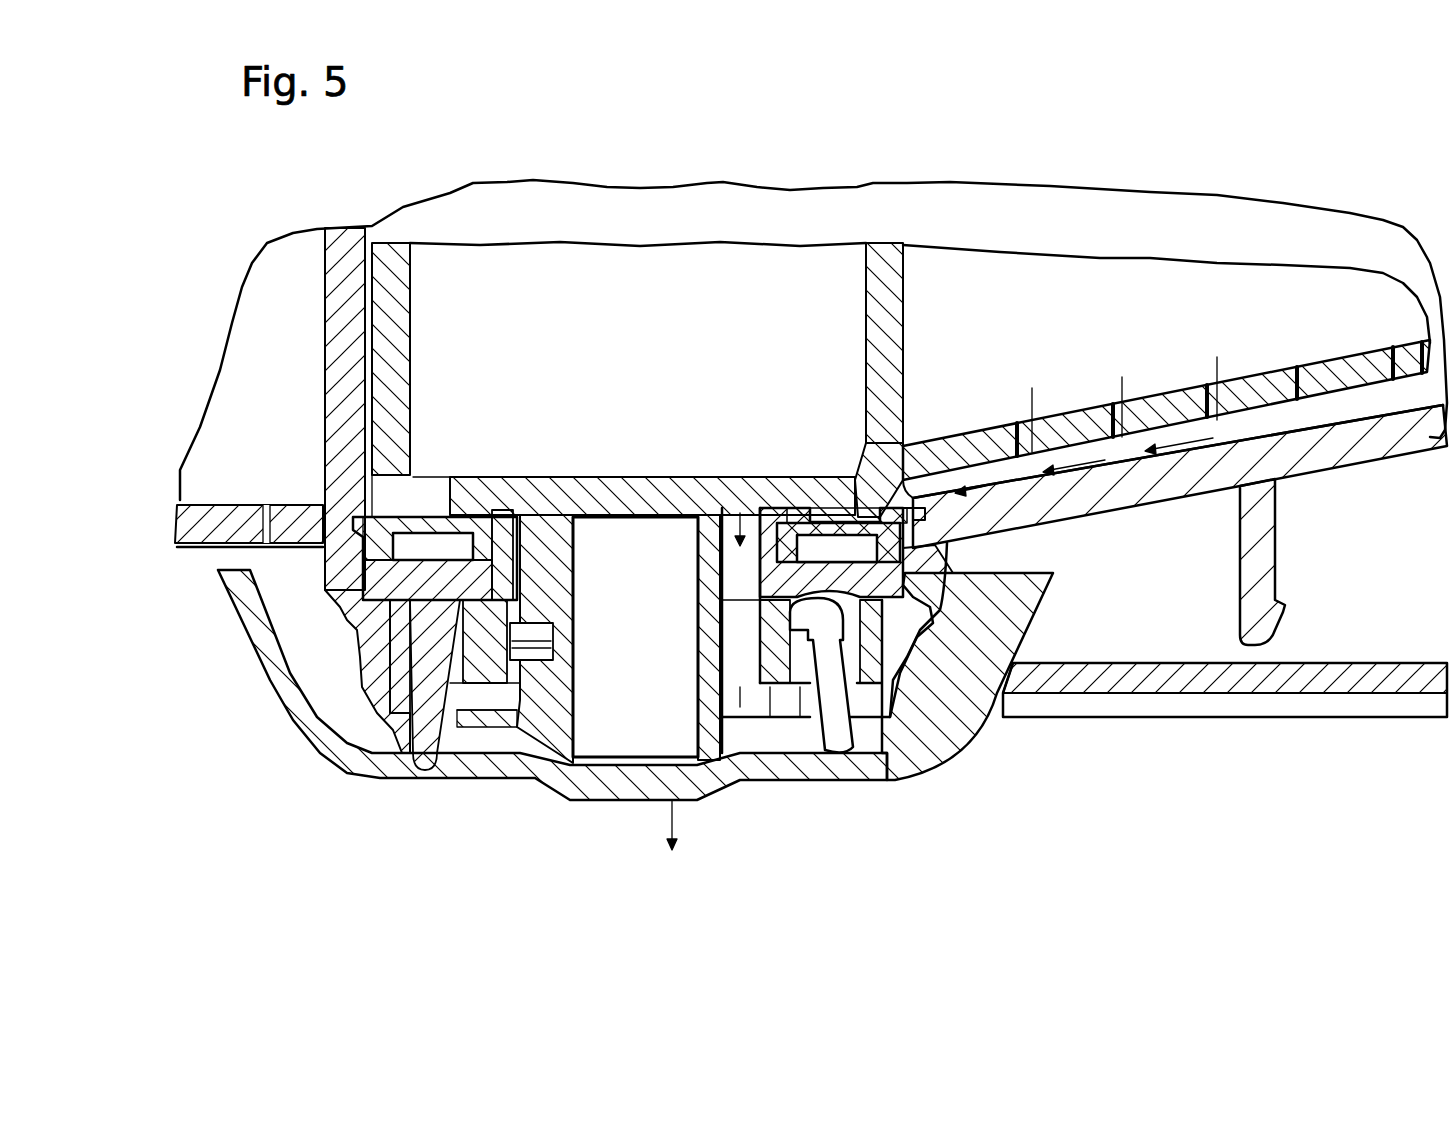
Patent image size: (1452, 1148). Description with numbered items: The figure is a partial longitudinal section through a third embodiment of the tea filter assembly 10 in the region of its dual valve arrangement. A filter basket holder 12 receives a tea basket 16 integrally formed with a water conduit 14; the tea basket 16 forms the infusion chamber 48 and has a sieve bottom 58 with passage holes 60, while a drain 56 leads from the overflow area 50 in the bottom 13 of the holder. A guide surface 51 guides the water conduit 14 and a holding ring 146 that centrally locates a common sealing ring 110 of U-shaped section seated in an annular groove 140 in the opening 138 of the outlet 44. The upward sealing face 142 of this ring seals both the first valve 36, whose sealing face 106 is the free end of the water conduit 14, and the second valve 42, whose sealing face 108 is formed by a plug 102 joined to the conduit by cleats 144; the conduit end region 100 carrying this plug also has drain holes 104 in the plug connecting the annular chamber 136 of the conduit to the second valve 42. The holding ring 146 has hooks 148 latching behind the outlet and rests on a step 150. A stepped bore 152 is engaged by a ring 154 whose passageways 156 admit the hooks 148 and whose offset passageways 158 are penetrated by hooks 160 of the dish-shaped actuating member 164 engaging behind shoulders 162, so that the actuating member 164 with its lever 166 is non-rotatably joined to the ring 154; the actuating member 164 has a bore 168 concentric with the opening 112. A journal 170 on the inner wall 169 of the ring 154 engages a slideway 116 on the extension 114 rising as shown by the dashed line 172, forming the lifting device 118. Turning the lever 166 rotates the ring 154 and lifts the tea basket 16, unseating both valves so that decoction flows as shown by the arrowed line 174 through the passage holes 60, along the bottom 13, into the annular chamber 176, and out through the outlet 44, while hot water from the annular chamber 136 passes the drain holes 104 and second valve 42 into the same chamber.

The tea filter assembly 10 is at (254, 218).
The filter basket holder 12 is at (191, 549).
The bottom 13 is at (1125, 487).
The water conduit 14 is at (884, 265).
The tea basket 16 is at (402, 243).
The first valve 36 is at (856, 508).
The second valve 42 is at (832, 508).
The outlet 44 is at (626, 784).
The infusion chamber 48 is at (1164, 312).
The overflow area 50 is at (285, 334).
The guide surface 51 is at (372, 230).
The drain 56 is at (290, 522).
The bottom 58 is at (1353, 370).
The passage holes 60 is at (1305, 370).
The beam 100 is at (555, 475).
The plug 102 is at (640, 477).
The drain holes 104 is at (427, 475).
The sealing face 106 is at (917, 440).
The sealing face 108 is at (818, 505).
The sealing ring 110 is at (925, 560).
The opening 112 is at (760, 570).
The extension 114 is at (546, 723).
The slideway 116 is at (562, 660).
The lifting device 118 is at (563, 652).
The annular chamber 136 is at (641, 292).
The opening 138 is at (335, 570).
The annular groove 140 is at (912, 510).
The sealing face 142 is at (342, 472).
The cleats 144 is at (440, 478).
The holding ring 146 is at (532, 568).
The hooks 148 is at (407, 770).
The step 150 is at (985, 735).
The stepped bore 152 is at (385, 651).
The ring 154 is at (753, 722).
The passageways 156 is at (462, 758).
The passageways 158 is at (850, 658).
The hooks 160 is at (826, 722).
The shoulders 162 is at (803, 748).
The actuating member 164 is at (913, 780).
The lever 166 is at (1300, 682).
The bore 168 is at (580, 792).
The inner wall 169 is at (747, 753).
The journal 170 is at (545, 633).
The dashed line 172 is at (548, 700).
The arrowed line 174 is at (740, 478).
The annular chamber 176 is at (740, 643).